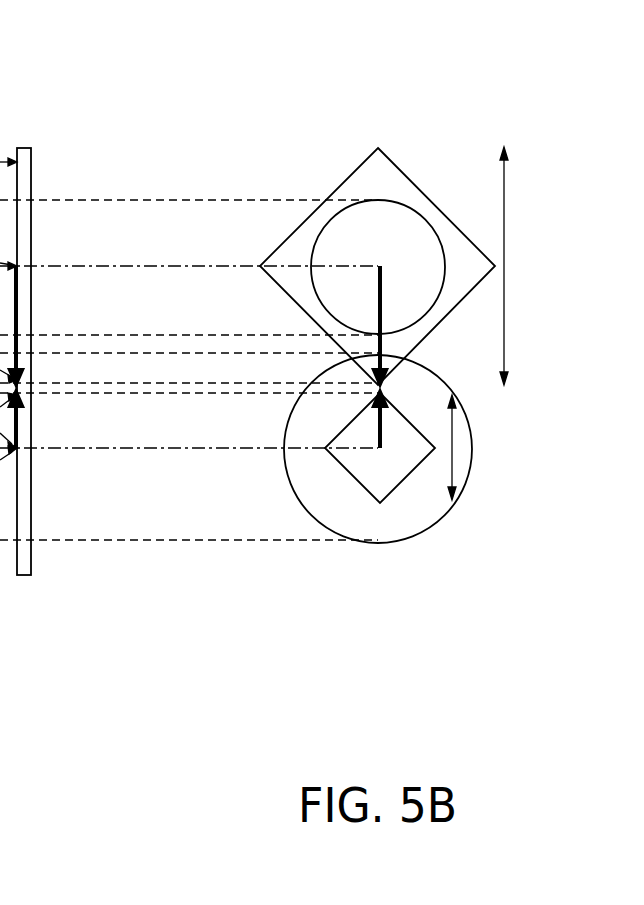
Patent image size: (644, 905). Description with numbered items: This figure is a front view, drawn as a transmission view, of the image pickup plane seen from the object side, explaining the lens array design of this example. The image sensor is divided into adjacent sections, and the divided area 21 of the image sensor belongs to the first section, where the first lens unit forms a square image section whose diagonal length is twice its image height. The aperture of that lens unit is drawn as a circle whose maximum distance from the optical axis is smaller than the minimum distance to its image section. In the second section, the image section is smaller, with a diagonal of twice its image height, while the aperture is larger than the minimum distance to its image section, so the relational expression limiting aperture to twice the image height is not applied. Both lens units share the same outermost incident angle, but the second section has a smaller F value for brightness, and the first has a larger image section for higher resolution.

The divided area of the image sensor 21 is at (27, 150).